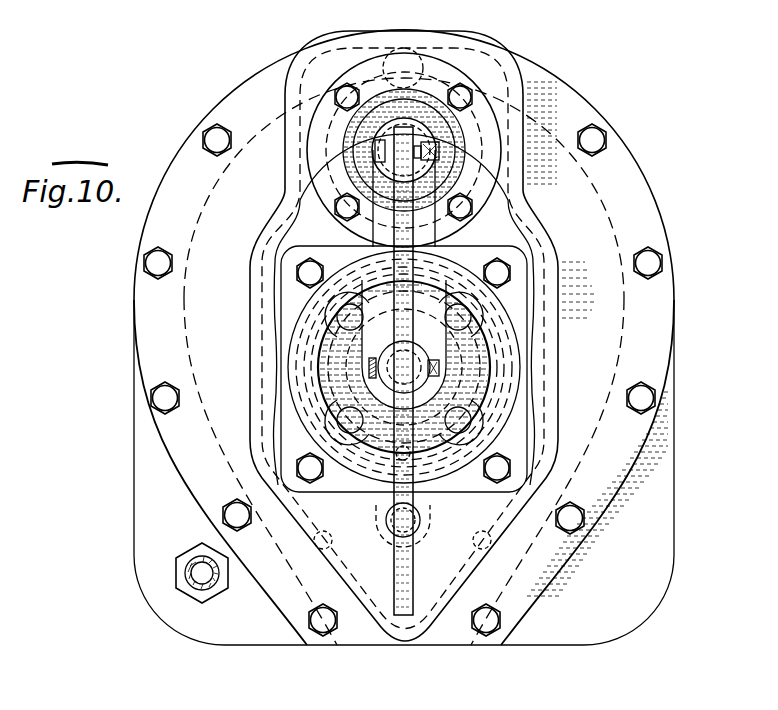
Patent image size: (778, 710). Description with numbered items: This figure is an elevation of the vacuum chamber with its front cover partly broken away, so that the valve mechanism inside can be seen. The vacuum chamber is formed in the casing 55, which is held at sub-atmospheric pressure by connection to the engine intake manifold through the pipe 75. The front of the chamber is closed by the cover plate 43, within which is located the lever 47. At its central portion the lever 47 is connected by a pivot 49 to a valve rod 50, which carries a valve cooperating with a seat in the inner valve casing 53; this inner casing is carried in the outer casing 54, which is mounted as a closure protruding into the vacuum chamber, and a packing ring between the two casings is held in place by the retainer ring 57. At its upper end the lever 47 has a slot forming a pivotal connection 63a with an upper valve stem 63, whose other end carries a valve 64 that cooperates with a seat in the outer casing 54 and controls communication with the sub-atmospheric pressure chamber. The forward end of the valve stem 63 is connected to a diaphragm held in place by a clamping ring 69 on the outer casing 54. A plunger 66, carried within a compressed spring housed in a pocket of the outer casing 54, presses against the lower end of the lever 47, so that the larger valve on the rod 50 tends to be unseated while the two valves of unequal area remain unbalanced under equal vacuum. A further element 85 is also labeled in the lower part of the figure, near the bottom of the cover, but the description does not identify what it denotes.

The cover plate 43 is at (552, 472).
The lever 47 is at (413, 232).
The pivot 49 is at (372, 373).
The valve rod 50 is at (438, 375).
The inner valve casing 53 is at (360, 430).
The casing 54 is at (540, 406).
The casing 55 is at (641, 177).
The retainer ring 57 is at (293, 294).
The upper valve stem 63 is at (441, 149).
The pivotal connection 63a is at (440, 150).
The valve 64 is at (470, 143).
The plunger 66 is at (422, 523).
The clamping ring 69 is at (447, 78).
The pipe 75 is at (190, 583).
The outlet opening 85 is at (210, 592).